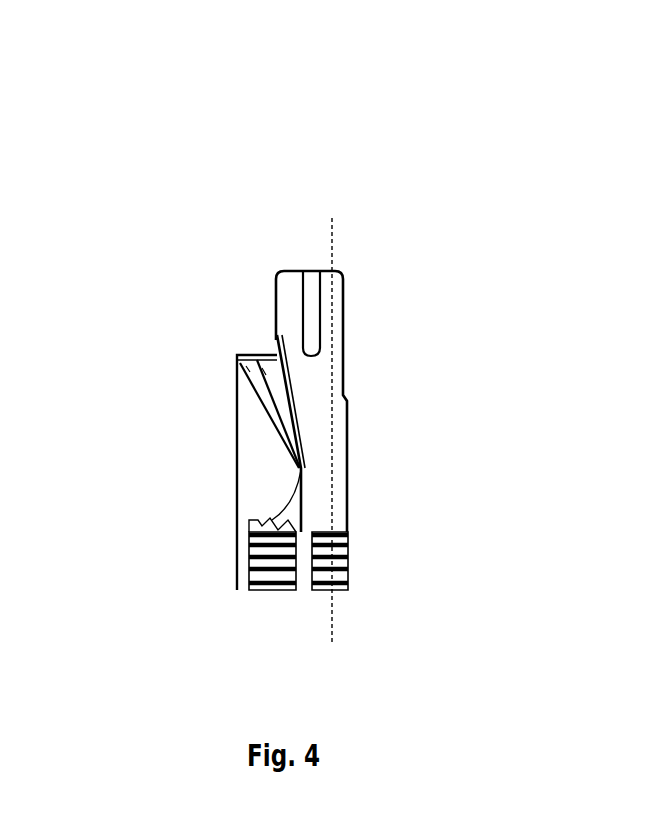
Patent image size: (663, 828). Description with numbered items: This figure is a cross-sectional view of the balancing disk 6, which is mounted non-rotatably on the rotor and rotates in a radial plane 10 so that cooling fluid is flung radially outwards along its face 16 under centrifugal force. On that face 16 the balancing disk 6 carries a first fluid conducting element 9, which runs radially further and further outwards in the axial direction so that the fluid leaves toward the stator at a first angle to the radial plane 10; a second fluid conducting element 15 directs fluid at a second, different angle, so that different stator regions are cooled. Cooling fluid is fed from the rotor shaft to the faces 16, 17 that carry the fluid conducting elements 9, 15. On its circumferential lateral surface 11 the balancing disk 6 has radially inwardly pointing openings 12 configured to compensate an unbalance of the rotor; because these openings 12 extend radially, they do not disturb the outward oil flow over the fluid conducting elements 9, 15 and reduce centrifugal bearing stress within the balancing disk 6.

The balancing disk 6 is at (285, 156).
The first fluid conducting element 9 is at (240, 362).
The radial plane 10 is at (332, 630).
The circumferential lateral surface 11 is at (290, 268).
The openings 12 is at (314, 268).
The second fluid conducting element 15 is at (260, 392).
The face 16 is at (237, 472).
The face 17 is at (347, 402).